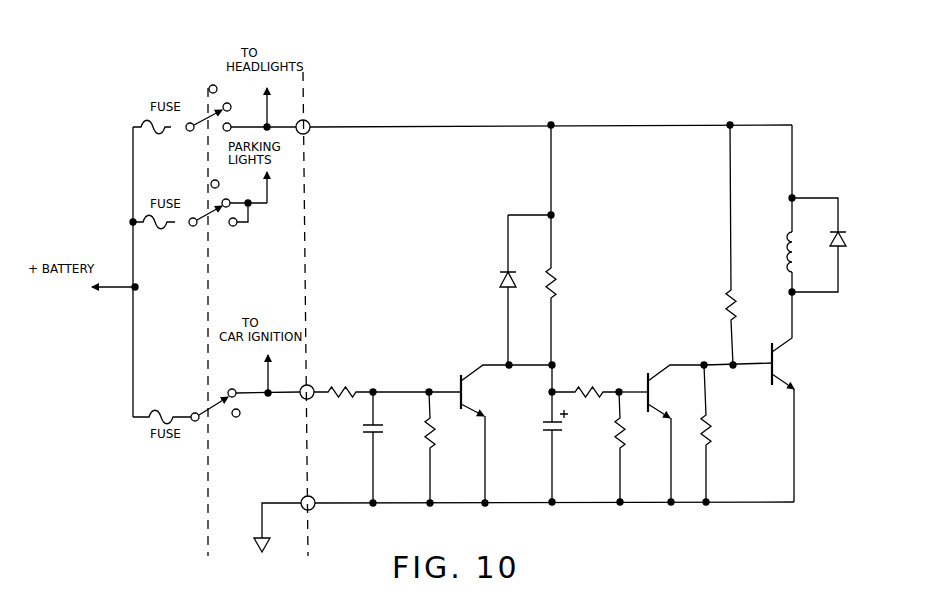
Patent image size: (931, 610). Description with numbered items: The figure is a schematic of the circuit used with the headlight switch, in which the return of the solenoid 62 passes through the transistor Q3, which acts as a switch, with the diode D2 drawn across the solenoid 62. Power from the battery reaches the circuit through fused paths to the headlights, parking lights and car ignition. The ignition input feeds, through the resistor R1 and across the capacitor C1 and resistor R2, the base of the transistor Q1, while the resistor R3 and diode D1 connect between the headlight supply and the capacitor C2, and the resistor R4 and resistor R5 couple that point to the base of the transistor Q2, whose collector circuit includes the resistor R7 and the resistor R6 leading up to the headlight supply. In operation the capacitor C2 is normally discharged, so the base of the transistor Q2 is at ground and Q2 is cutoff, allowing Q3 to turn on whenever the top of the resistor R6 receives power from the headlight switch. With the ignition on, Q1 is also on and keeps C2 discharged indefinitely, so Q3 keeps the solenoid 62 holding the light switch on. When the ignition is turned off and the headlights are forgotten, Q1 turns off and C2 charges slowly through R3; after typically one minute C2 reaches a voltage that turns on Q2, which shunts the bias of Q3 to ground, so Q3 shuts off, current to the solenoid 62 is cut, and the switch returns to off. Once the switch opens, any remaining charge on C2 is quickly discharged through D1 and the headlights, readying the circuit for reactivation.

The solenoid 62 is at (790, 234).
The resistor R1 is at (343, 381).
The resistor R2 is at (439, 447).
The resistor R3 is at (564, 290).
The resistor R4 is at (585, 382).
The resistor R5 is at (629, 447).
The resistor R6 is at (713, 243).
The resistor R7 is at (715, 433).
The capacitor C1 is at (377, 447).
The capacitor C2 is at (557, 445).
The diode D1 is at (490, 290).
The diode D2 is at (831, 245).
The transistor Q1 is at (485, 434).
The transistor Q2 is at (676, 433).
The transistor Q3 is at (786, 397).